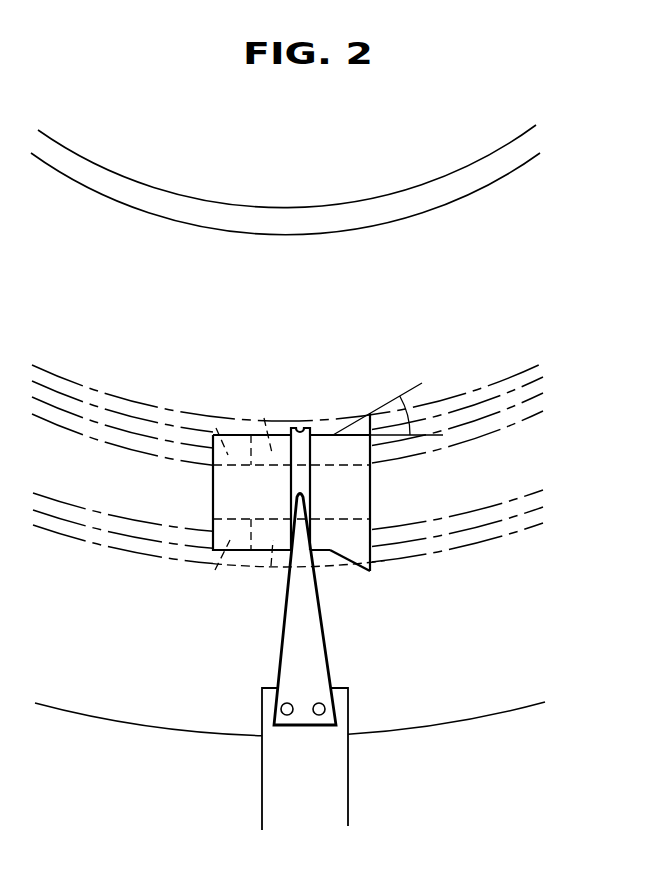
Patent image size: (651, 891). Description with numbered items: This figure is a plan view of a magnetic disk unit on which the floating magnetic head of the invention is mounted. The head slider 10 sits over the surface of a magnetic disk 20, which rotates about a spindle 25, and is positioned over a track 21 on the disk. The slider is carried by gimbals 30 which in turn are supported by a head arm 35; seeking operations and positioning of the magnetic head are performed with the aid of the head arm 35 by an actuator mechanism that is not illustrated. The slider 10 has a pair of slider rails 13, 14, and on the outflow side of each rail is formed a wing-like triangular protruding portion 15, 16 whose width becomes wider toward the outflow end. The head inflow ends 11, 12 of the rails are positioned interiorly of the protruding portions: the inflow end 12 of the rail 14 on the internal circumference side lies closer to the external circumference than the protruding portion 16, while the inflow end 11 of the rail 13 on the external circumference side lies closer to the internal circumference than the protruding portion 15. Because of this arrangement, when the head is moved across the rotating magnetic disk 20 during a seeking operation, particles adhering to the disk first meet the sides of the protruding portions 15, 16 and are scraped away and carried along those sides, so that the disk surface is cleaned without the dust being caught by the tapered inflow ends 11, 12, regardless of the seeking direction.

The head slider 10 is at (213, 497).
The head inflow end 11 is at (210, 578).
The head inflow end 12 is at (213, 422).
The slider rail 13 is at (270, 570).
The slider rail 14 is at (262, 412).
The wing-like triangular protruding portion 15 is at (372, 570).
The wing-like triangular protruding portion 16 is at (364, 419).
The magnetic disk 20 is at (285, 228).
The track 21 is at (556, 357).
The spindle 25 is at (287, 166).
The gimbals 30 is at (307, 627).
The head arm 35 is at (332, 765).